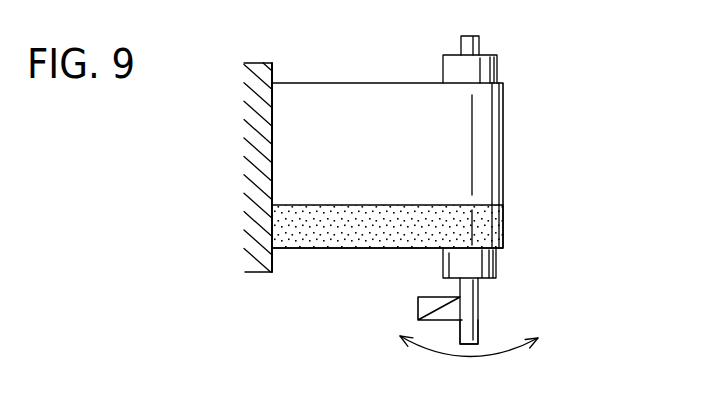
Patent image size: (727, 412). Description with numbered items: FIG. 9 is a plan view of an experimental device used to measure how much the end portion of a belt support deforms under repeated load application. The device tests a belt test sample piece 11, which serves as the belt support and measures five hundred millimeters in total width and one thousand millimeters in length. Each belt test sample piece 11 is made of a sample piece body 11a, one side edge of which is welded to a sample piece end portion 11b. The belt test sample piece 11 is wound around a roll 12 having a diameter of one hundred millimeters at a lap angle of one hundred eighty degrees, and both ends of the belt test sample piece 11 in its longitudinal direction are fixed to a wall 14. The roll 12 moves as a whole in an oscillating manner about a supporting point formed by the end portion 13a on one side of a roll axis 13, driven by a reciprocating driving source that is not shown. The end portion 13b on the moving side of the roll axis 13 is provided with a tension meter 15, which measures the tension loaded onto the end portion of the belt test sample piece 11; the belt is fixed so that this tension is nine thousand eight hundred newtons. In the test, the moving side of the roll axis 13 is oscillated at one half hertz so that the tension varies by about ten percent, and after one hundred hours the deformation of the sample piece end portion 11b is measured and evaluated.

The belt test sample piece 11 is at (417, 145).
The sample piece body 11a is at (485, 143).
The sample piece end portion 11b is at (485, 226).
The roll 12 is at (487, 262).
The roll axis 13 is at (470, 298).
The end portion 13a is at (467, 44).
The end portion 13b is at (468, 333).
The wall 14 is at (275, 70).
The tension meter 15 is at (428, 304).